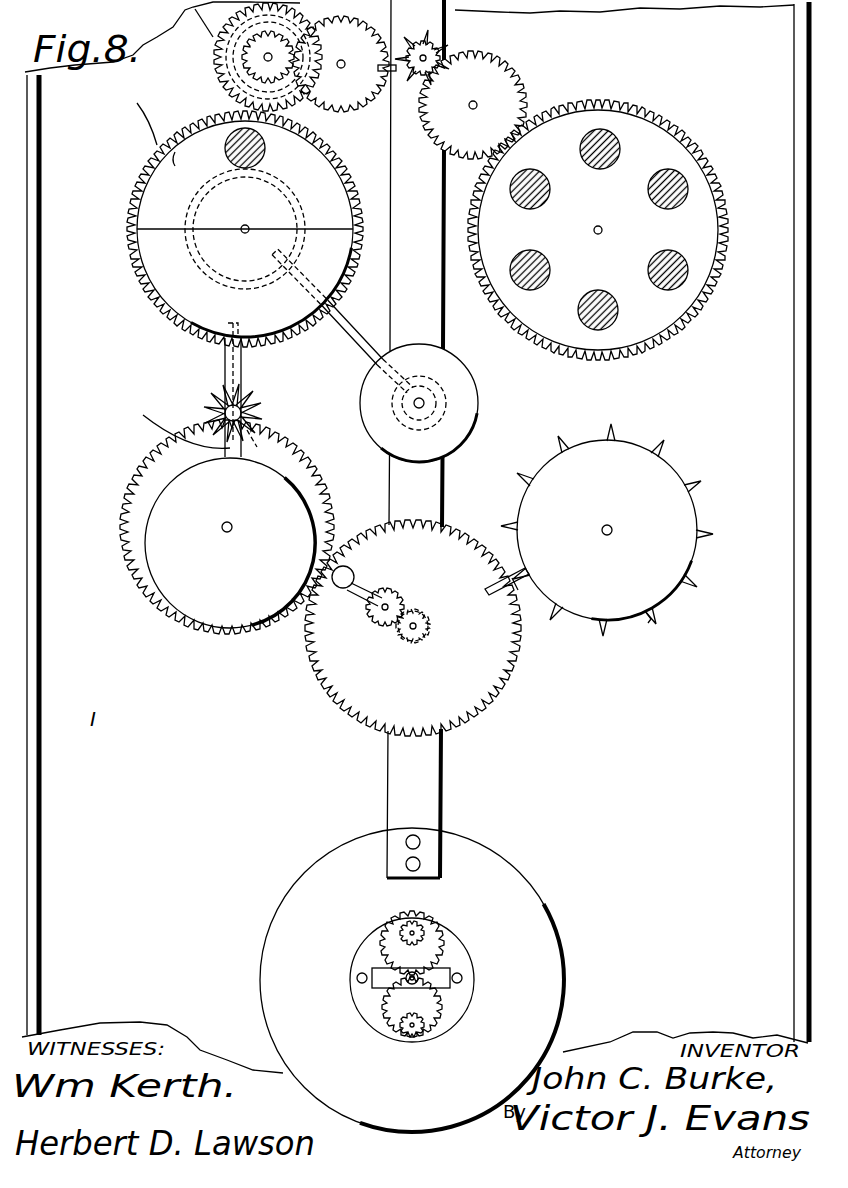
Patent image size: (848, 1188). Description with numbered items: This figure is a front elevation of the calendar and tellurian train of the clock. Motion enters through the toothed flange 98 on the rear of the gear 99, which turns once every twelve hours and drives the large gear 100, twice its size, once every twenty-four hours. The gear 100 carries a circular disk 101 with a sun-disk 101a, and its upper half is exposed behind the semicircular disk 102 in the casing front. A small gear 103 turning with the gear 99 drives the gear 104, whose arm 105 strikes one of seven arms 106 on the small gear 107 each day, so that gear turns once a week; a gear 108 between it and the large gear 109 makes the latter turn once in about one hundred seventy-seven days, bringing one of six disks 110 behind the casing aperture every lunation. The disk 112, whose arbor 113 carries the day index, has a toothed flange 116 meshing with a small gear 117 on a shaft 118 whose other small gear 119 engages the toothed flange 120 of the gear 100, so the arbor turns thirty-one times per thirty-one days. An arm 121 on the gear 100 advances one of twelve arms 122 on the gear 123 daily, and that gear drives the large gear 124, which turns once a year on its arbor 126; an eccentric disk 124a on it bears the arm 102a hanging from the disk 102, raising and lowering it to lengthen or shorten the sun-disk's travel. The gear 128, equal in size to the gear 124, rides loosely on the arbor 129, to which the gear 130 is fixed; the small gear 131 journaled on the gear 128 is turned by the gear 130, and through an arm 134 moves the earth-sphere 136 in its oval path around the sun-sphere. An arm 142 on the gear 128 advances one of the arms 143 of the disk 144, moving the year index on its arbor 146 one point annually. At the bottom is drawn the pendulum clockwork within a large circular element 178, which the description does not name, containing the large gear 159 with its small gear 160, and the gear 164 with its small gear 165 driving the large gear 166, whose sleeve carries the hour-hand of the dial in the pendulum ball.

The toothed flange 98 is at (214, 58).
The gear 99 is at (191, 18).
The large gear 100 is at (132, 200).
The circular disk 101 is at (137, 124).
The sun-disk 101a is at (263, 156).
The semicircular disk 102 is at (160, 243).
The arm 102a is at (162, 424).
The small gear 103 is at (250, 68).
The gear 104 is at (341, 64).
The arm 105 is at (385, 72).
The arms 106 is at (419, 42).
The small gear 107 is at (430, 68).
The gear 108 is at (513, 90).
The large gear 109 is at (651, 333).
The disks 110 is at (667, 251).
The disk 112 is at (476, 395).
The arbor 113 is at (426, 404).
The toothed flange 116 is at (440, 385).
The small gear 117 is at (405, 364).
The shaft 118 is at (361, 346).
The small gear 119 is at (292, 260).
The toothed flange 120 is at (193, 268).
The arm 121 is at (224, 368).
The arms 122 is at (244, 398).
The gear 123 is at (256, 452).
The large gear 124 is at (197, 527).
The disk 124a is at (230, 543).
The arbor 126 is at (231, 525).
The gear 128 is at (495, 686).
The arbor 129 is at (410, 633).
The gear 130 is at (422, 623).
The small gear 131 is at (377, 613).
The arm 134 is at (375, 582).
The earth-sphere 136 is at (352, 571).
The arm 142 is at (520, 588).
The arms 143 is at (652, 617).
The disk 144 is at (607, 530).
The arbor 146 is at (611, 525).
The large gear 159 is at (420, 918).
The small gear 160 is at (420, 933).
The gear 164 is at (412, 1048).
The small gear 165 is at (406, 1026).
The large gear 166 is at (387, 955).
The disc wheel 178 is at (412, 980).